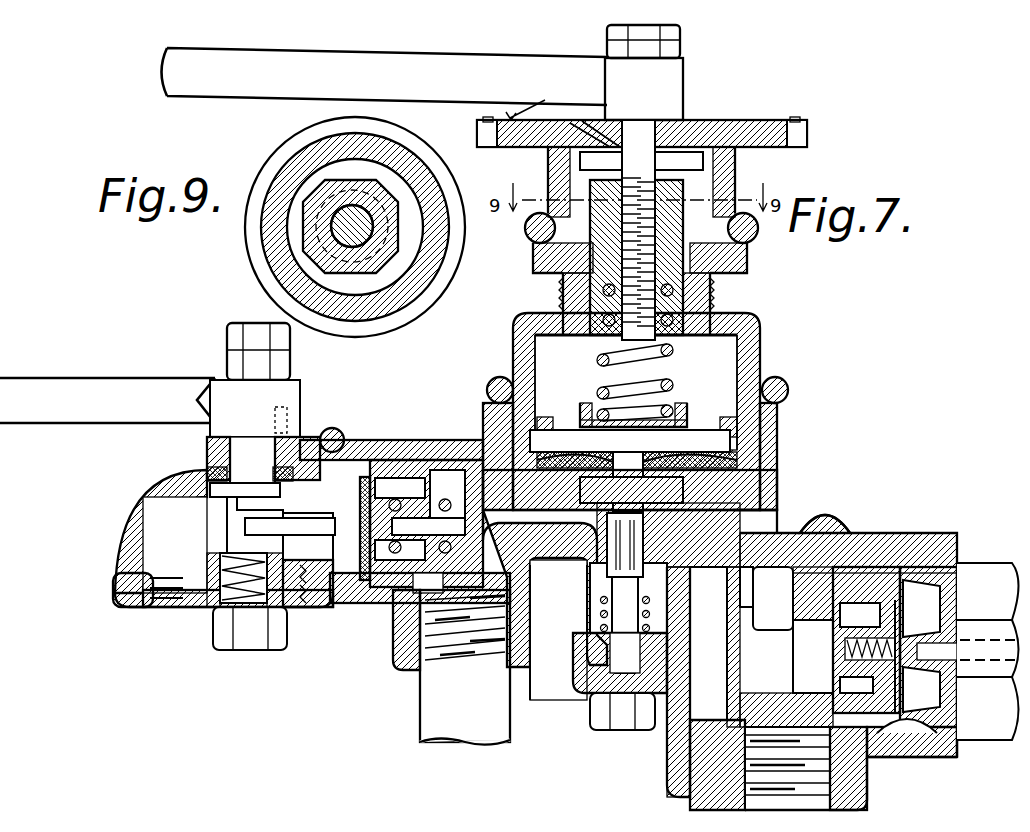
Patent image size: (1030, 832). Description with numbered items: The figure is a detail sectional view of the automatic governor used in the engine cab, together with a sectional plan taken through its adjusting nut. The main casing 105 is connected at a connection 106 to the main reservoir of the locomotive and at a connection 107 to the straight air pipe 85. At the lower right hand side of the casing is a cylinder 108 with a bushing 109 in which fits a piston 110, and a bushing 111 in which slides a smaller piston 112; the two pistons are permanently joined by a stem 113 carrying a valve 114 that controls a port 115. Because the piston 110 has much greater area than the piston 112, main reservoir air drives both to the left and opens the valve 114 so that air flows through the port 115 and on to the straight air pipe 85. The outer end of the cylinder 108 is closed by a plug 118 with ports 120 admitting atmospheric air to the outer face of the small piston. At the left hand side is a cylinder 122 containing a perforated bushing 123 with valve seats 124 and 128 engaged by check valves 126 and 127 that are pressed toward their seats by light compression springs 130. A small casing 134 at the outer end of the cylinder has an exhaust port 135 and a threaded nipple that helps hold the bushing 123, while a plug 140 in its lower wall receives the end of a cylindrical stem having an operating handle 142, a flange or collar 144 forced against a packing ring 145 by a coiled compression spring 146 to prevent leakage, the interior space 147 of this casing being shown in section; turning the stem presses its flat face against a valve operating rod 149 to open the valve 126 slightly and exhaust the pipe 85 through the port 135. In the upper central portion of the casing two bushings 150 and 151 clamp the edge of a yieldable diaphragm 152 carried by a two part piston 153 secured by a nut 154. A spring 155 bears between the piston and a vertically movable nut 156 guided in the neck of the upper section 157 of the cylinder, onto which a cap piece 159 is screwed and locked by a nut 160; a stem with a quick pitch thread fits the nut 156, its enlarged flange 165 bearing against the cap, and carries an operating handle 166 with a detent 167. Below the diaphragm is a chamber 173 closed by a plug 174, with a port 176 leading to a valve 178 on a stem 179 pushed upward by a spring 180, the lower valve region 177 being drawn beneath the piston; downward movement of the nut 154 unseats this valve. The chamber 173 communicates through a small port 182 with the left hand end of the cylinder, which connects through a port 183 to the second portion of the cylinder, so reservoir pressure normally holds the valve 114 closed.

In FIG. 7, the straight air pipe 85 is at (440, 717).
In FIG. 7, the main casing 105 is at (800, 502).
In FIG. 7, the main reservoir connection 106 is at (868, 796).
In FIG. 7, the straight air pipe connection 107 is at (406, 660).
In FIG. 7, the cylinder 108 is at (692, 712).
In FIG. 7, the bushing 109 is at (740, 745).
In FIG. 7, the piston 110 is at (770, 657).
In FIG. 7, the bushing 111 is at (880, 552).
In FIG. 7, the piston 112 is at (905, 607).
In FIG. 7, the stem 113 is at (818, 660).
In FIG. 7, the valve 114 is at (882, 530).
In FIG. 7, the port 115 is at (790, 525).
In FIG. 7, the plug 118 is at (962, 553).
In FIG. 7, the ports 120 is at (945, 690).
In FIG. 7, the cylinder 122 is at (360, 437).
In FIG. 7, the perforated bushing 123 is at (391, 447).
In FIG. 7, the valve seat 124 is at (317, 613).
In FIG. 7, the check valve 126 is at (366, 596).
In FIG. 7, the check valve 127 is at (480, 473).
In FIG. 7, the valve seat 128 is at (490, 596).
In FIG. 7, the compression springs 130 is at (421, 452).
In FIG. 7, the small casing 134 is at (181, 471).
In FIG. 7, the exhaust port 135 is at (155, 607).
In FIG. 7, the plug 140 is at (234, 650).
In FIG. 7, the operating handle 142 is at (168, 393).
In FIG. 7, the flange or collar 144 is at (150, 499).
In FIG. 7, the packing ring 145 is at (232, 468).
In FIG. 7, the coiled compression spring 146 is at (212, 630).
In FIG. 7, the elbow chamber 147 is at (185, 525).
In FIG. 7, the valve operating rod 149 is at (308, 520).
In FIG. 7, the bushing 150 is at (773, 402).
In FIG. 7, the bushing 151 is at (788, 458).
In FIG. 7, the yieldable diaphragm 152 is at (782, 406).
In FIG. 7, the two part piston 153 is at (641, 460).
In FIG. 7, the nut 154 is at (600, 386).
In FIG. 7, the spring 155 is at (600, 350).
In FIG. 9, the vertically movable nut 156 is at (383, 205).
In FIG. 7, the vertically movable nut 156 is at (752, 242).
In FIG. 7, the upper section of the cylinder 157 is at (715, 306).
In FIG. 9, the cap piece 159 is at (369, 302).
In FIG. 7, the cap piece 159 is at (545, 235).
In FIG. 7, the nut 160 is at (738, 268).
In FIG. 7, the enlarged flange 165 is at (700, 150).
In FIG. 7, the operating handle 166 is at (397, 58).
In FIG. 7, the detent 167 is at (541, 98).
In FIG. 7, the chamber 173 is at (565, 632).
In FIG. 7, the plug 174 is at (596, 712).
In FIG. 7, the port 176 is at (603, 533).
In FIG. 7, the valve stem 177 is at (628, 593).
In FIG. 7, the valve 178 is at (610, 602).
In FIG. 7, the valve stem 179 is at (598, 612).
In FIG. 7, the spring 180 is at (752, 584).
In FIG. 7, the port 182 is at (680, 612).
In FIG. 7, the port 183 is at (766, 625).